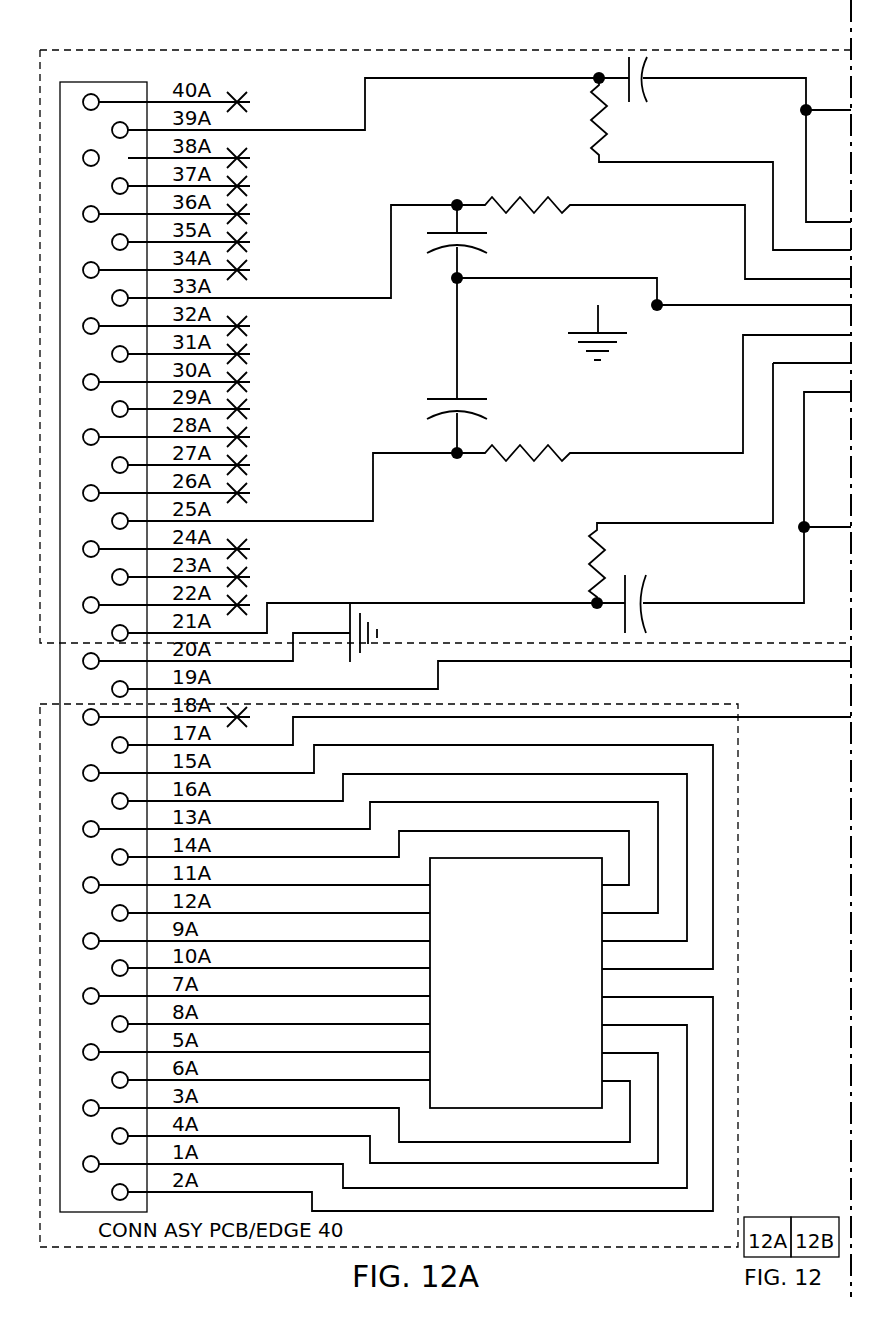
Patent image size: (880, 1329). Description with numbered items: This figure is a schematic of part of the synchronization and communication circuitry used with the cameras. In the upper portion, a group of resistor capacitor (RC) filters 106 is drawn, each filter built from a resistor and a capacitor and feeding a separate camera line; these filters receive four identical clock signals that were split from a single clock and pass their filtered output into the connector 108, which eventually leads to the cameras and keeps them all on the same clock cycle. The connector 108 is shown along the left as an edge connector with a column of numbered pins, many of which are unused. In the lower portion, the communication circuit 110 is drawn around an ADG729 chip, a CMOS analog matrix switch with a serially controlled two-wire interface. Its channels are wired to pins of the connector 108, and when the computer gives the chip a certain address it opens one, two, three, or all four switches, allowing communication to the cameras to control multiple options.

The resistor capacitor (RC) filters 106 is at (579, 62).
The connector 108 is at (125, 62).
The communication circuit 110 is at (738, 988).